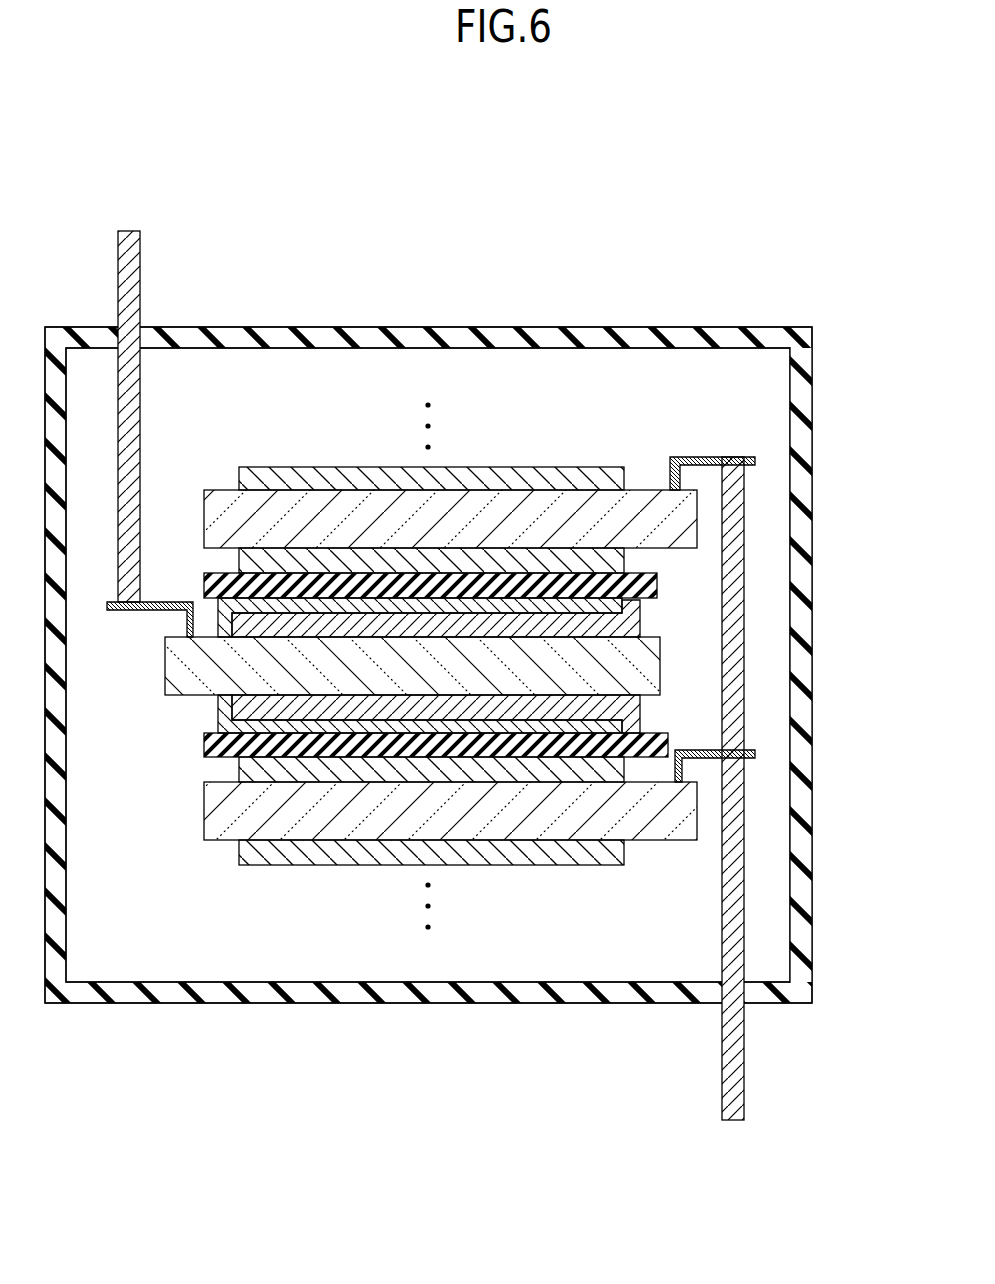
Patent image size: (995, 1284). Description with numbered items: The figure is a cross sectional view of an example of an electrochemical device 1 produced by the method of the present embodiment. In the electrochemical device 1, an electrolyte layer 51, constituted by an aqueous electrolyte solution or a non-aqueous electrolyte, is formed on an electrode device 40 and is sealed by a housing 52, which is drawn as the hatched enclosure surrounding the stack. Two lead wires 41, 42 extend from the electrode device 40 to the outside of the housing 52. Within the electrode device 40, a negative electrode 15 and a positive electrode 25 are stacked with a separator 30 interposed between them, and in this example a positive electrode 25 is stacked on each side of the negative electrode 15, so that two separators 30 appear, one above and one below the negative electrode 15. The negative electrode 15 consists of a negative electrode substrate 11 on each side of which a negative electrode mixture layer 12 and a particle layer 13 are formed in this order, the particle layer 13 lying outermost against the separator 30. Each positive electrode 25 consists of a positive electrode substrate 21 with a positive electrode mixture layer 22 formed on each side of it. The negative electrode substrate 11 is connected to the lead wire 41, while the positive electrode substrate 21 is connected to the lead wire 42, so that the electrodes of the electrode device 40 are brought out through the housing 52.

The electrochemical device 1 is at (72, 196).
The negative electrode substrate 11 is at (650, 660).
The negative electrode mixture layer 12 is at (625, 628).
The particle layer 13 is at (630, 607).
The negative electrode 15 is at (875, 592).
The positive electrode substrate 21 is at (690, 511).
The positive electrode mixture layer 22 is at (600, 487).
The positive electrode 25 is at (872, 467).
The separator 30 is at (645, 583).
The electrode device 40 is at (918, 500).
The lead wire 41 is at (131, 260).
The lead wire 42 is at (735, 1050).
The electrolyte layer 51 is at (325, 378).
The housing 52 is at (507, 338).